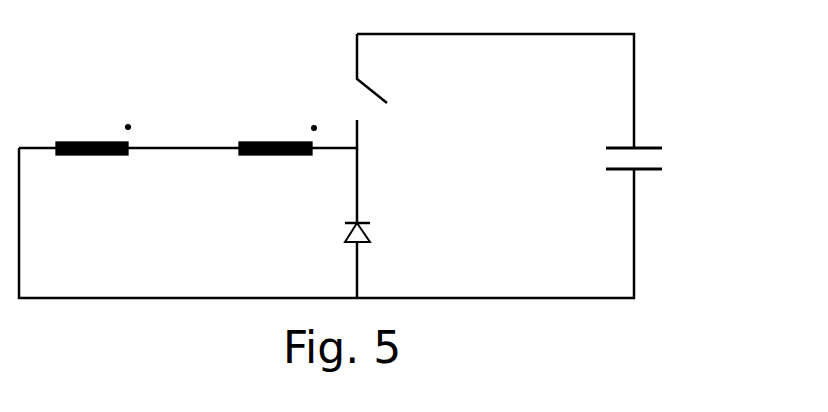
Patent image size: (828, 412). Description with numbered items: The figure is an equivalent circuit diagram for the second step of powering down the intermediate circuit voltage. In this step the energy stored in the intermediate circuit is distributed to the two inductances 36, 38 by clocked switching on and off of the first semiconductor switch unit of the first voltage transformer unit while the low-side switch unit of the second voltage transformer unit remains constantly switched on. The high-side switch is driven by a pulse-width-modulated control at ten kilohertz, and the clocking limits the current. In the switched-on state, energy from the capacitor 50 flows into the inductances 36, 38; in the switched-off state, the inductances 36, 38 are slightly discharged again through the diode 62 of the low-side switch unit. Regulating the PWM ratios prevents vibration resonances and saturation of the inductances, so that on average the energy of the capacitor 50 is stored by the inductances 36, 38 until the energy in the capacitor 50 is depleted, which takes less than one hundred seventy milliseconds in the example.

The inductance 38 is at (92, 157).
The inductance 36 is at (275, 157).
The diode 62 is at (348, 235).
The capacitor 50 is at (647, 172).